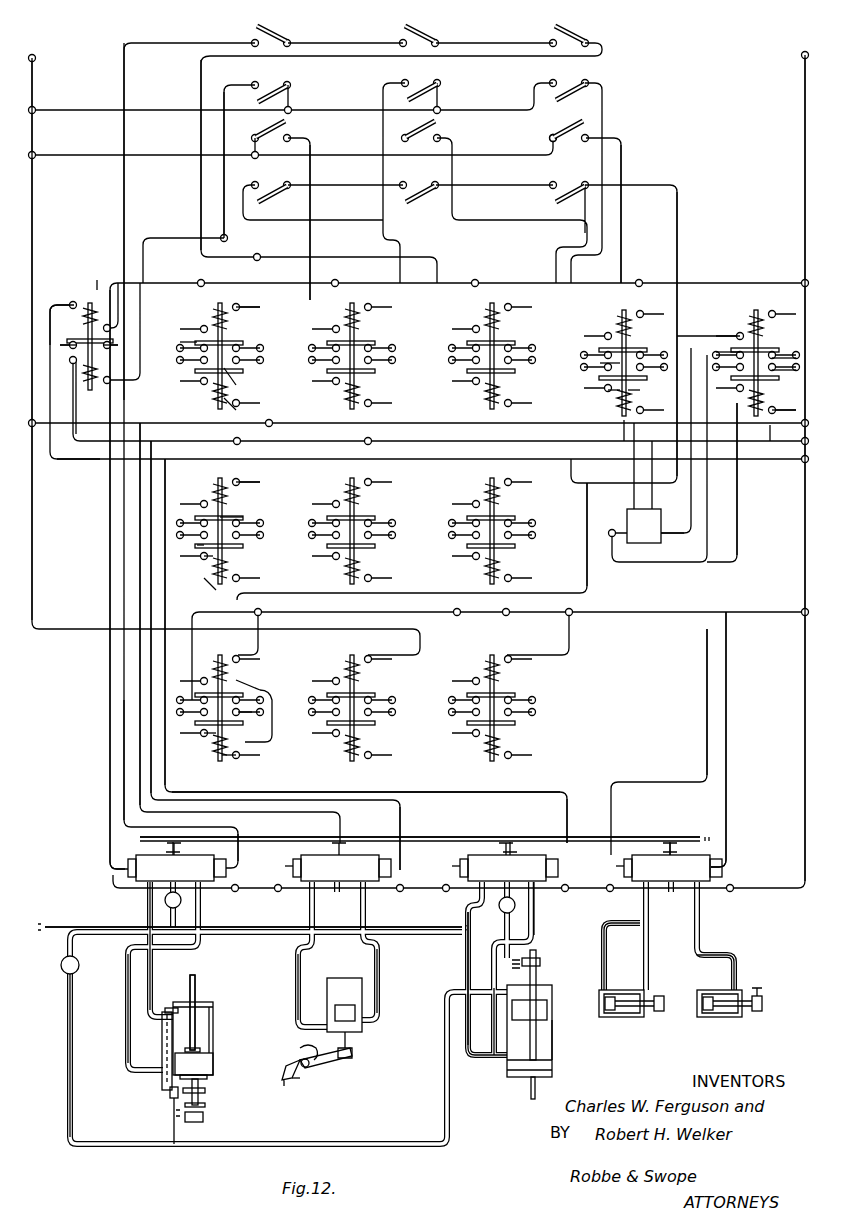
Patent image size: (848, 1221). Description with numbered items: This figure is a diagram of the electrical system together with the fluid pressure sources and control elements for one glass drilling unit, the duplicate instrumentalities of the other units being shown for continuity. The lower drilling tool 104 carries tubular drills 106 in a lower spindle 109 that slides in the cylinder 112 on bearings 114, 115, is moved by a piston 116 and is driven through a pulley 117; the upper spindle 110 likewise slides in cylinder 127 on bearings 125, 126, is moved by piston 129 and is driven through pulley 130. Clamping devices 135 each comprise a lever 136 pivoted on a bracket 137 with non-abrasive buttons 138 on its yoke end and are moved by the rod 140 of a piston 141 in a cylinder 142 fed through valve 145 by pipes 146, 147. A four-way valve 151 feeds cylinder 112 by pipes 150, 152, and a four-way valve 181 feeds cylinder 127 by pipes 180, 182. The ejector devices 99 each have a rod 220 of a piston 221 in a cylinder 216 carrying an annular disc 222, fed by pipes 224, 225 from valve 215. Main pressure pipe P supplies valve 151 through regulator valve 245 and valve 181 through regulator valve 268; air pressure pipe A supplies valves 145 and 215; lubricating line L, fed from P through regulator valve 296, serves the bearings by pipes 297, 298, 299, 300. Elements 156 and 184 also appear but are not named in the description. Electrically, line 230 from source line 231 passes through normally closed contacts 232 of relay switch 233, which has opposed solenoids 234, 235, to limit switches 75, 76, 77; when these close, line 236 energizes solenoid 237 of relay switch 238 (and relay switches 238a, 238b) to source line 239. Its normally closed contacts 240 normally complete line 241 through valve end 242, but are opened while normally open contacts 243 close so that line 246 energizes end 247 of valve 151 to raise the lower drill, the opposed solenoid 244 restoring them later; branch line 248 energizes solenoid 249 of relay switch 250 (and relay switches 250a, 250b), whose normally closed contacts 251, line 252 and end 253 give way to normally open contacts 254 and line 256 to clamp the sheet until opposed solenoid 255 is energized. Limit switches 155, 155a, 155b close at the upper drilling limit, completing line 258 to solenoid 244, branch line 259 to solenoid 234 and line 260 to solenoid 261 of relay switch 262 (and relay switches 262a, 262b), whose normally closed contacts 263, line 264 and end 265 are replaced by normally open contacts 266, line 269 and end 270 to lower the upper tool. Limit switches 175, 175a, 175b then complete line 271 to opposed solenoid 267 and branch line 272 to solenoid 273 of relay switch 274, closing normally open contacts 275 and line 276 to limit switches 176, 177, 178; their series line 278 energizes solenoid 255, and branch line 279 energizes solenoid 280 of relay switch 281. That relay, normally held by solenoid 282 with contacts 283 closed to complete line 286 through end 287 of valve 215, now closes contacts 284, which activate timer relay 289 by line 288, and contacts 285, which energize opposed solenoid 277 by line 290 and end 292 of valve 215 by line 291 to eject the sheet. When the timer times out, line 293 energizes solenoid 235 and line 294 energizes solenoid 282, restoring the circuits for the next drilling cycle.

The limit switch 75 is at (275, 36).
The limit switch 76 is at (422, 36).
The limit switch 77 is at (571, 36).
The ejector devices 99 is at (688, 990).
The lower drilling tool 104 is at (215, 1002).
The tubular drills 106 is at (531, 1097).
The lower spindle 109 is at (212, 1091).
The upper spindle 110 is at (536, 1080).
The cylinder 112 is at (213, 1028).
The bearing 114 is at (208, 1077).
The bearing 115 is at (215, 1003).
The piston 116 is at (200, 1055).
The pulley 117 is at (210, 1123).
The bearing 125 is at (552, 1064).
The bearing 126 is at (552, 986).
The cylinder 127 is at (552, 1033).
The piston 129 is at (548, 1010).
The pulley 130 is at (536, 955).
The clamping devices 135 is at (313, 1079).
The lever 136 is at (334, 1058).
The bracket 137 is at (300, 1048).
The non-abrasive buttons 138 is at (284, 1080).
The rod 140 is at (348, 1040).
The piston 141 is at (335, 1012).
The cylinder 142 is at (327, 992).
The valve 145 is at (342, 862).
The pipe 146 is at (380, 948).
The pipe 147 is at (302, 948).
The pipe 150 is at (125, 1068).
The four-way valve 151 is at (177, 862).
The pipe 152 is at (153, 963).
The limit switch 155 is at (280, 90).
The limit switch 155a is at (428, 90).
The limit switch 155b is at (573, 90).
The plate 156 is at (216, 1113).
The limit switch 175 is at (288, 125).
The limit switch 175a is at (438, 128).
The limit switch 175b is at (556, 128).
The limit switch 176 is at (276, 200).
The limit switch 177 is at (420, 200).
The limit switch 178 is at (578, 196).
The pipe 180 is at (465, 972).
The four-way valve 181 is at (509, 862).
The pipe 182 is at (531, 926).
The cap 184 is at (547, 968).
The valve 215 is at (673, 862).
The cylinder 216 is at (635, 1020).
The rod 220 is at (658, 1012).
The piston 221 is at (608, 1012).
The annular disc 222 is at (760, 992).
The pipes 224 is at (672, 955).
The pipes 225 is at (606, 926).
The line 230 is at (348, 43).
The source line 231 is at (32, 80).
The normally closed contacts 232 is at (104, 360).
The relay switch 233 is at (66, 274).
The solenoid 234 is at (88, 385).
The solenoid 235 is at (97, 300).
The line 236 is at (604, 52).
The solenoid 237 is at (224, 398).
The relay switch 238 is at (193, 316).
The relay switch 238a is at (327, 340).
The relay switch 238b is at (504, 333).
The source line 239 is at (805, 165).
The normally closed contacts 240 is at (193, 333).
The line 241 is at (197, 345).
The valve end 242 is at (125, 866).
The normally open contacts 243 is at (224, 368).
The solenoid 244 is at (212, 312).
The regulator valve 245 is at (181, 900).
The line 246 is at (178, 480).
The valve end 247 is at (228, 868).
The branch line 248 is at (190, 498).
The solenoid 249 is at (236, 484).
The relay switch 250 is at (196, 576).
The relay switch 250a is at (325, 545).
The relay switch 250b is at (521, 547).
The normally closed contacts 251 is at (240, 520).
The line 252 is at (140, 725).
The valve end 253 is at (290, 870).
The normally open contacts 254 is at (200, 540).
The solenoid 255 is at (204, 565).
The line 256 is at (151, 645).
The line 258 is at (240, 85).
The branch line 259 is at (175, 257).
The line 260 is at (276, 740).
The solenoid 261 is at (228, 755).
The relay switch 262 is at (205, 746).
The relay switch 262a is at (382, 746).
The relay switch 262b is at (481, 750).
The normally closed contacts 263 is at (236, 680).
The line 264 is at (168, 700).
The valve end 265 is at (457, 870).
The normally open contacts 266 is at (238, 712).
The solenoid 267 is at (218, 660).
The regulator valve 268 is at (515, 905).
The line 269 is at (288, 790).
The valve end 270 is at (560, 860).
The line 271 is at (312, 146).
The branch line 272 is at (622, 168).
The solenoid 273 is at (627, 328).
The relay switch 274 is at (610, 396).
The normally open contacts 275 is at (613, 361).
The line 276 is at (330, 188).
The solenoid 277 is at (627, 400).
The line 278 is at (678, 223).
The branch line 279 is at (684, 336).
The solenoid 280 is at (752, 318).
The relay switch 281 is at (772, 428).
The solenoid 282 is at (770, 441).
The contacts 283 is at (738, 348).
The contacts 284 is at (783, 360).
The contacts 285 is at (778, 410).
The line 286 is at (707, 630).
The valve end 287 is at (621, 870).
The line 288 is at (672, 533).
The timer relay 289 is at (645, 526).
The line 290 is at (635, 380).
The line 291 is at (727, 653).
The valve end 292 is at (721, 875).
The line 293 is at (58, 463).
The line 294 is at (737, 510).
The regulator valve 296 is at (61, 968).
The pipe 297 is at (170, 1090).
The pipe 298 is at (168, 1010).
The pipe 299 is at (468, 1060).
The pipe 300 is at (491, 992).
The air pressure source pipe A is at (510, 837).
The main pressure supply pipe P is at (264, 927).
The lubricating supply line L is at (67, 1036).